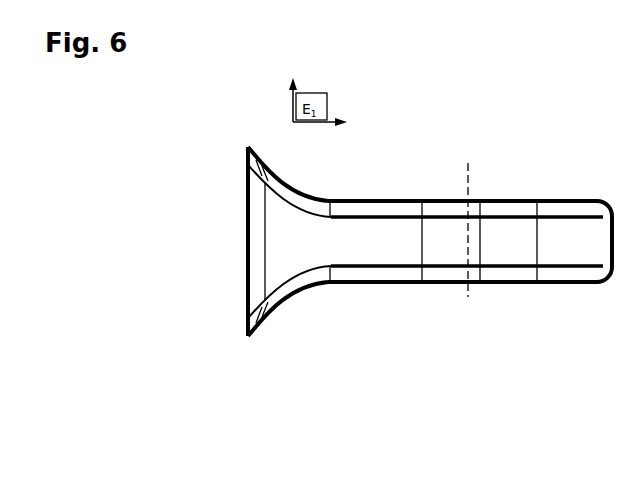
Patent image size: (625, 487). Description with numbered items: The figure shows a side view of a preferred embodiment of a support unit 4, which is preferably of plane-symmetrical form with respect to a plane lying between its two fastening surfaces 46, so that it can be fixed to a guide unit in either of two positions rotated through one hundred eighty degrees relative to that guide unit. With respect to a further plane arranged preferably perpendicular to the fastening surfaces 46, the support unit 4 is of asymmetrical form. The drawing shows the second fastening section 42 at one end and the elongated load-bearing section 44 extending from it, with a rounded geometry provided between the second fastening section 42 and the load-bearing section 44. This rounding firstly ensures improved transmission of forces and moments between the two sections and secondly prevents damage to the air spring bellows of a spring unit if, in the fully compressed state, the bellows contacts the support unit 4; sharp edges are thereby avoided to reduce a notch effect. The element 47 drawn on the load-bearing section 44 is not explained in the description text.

The fastening device 4 is at (440, 330).
The flange 42 is at (247, 333).
The tubular body 44 is at (412, 233).
The ring segment 46 is at (542, 198).
The centre marking 47 is at (480, 237).